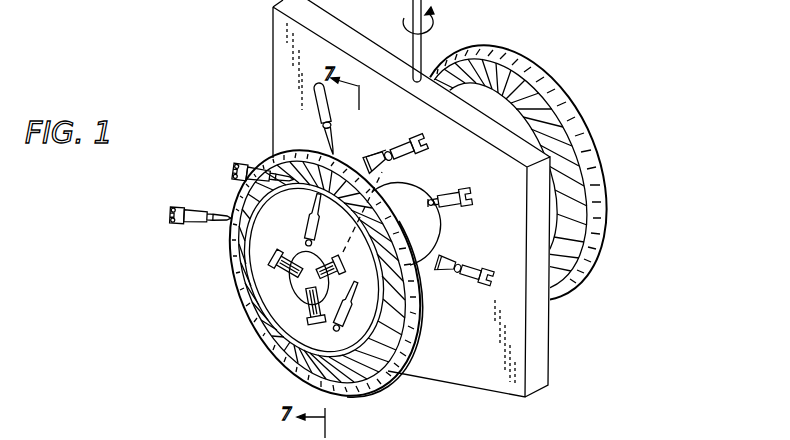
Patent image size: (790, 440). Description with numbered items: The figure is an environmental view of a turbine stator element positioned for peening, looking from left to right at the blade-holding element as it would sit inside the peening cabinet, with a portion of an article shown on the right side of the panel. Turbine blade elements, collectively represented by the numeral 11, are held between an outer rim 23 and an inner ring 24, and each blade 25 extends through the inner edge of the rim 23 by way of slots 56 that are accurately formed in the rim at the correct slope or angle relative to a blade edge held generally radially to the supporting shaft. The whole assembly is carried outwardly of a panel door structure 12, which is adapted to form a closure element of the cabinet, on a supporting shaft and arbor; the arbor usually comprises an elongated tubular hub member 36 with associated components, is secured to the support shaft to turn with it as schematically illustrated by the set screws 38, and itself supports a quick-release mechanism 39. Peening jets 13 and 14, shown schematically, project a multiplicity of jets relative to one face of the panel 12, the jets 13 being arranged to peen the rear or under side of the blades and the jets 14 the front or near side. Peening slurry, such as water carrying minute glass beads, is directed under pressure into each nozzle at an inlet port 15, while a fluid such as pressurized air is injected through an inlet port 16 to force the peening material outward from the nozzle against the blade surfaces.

The turbine blade elements 11 is at (538, 77).
The panel door structure 12 is at (542, 345).
The peening jets 13 is at (333, 125).
The peening jets 14 is at (252, 163).
The inlet port 15 is at (233, 163).
The inlet port 16 is at (235, 177).
The outer rim 23 is at (597, 152).
The inner ring 24 is at (564, 106).
The blade 25 is at (488, 77).
The tubular hub member 36 is at (263, 305).
The set screws 38 is at (388, 158).
The quick-release mechanism 39 is at (283, 254).
The slots 56 is at (286, 150).